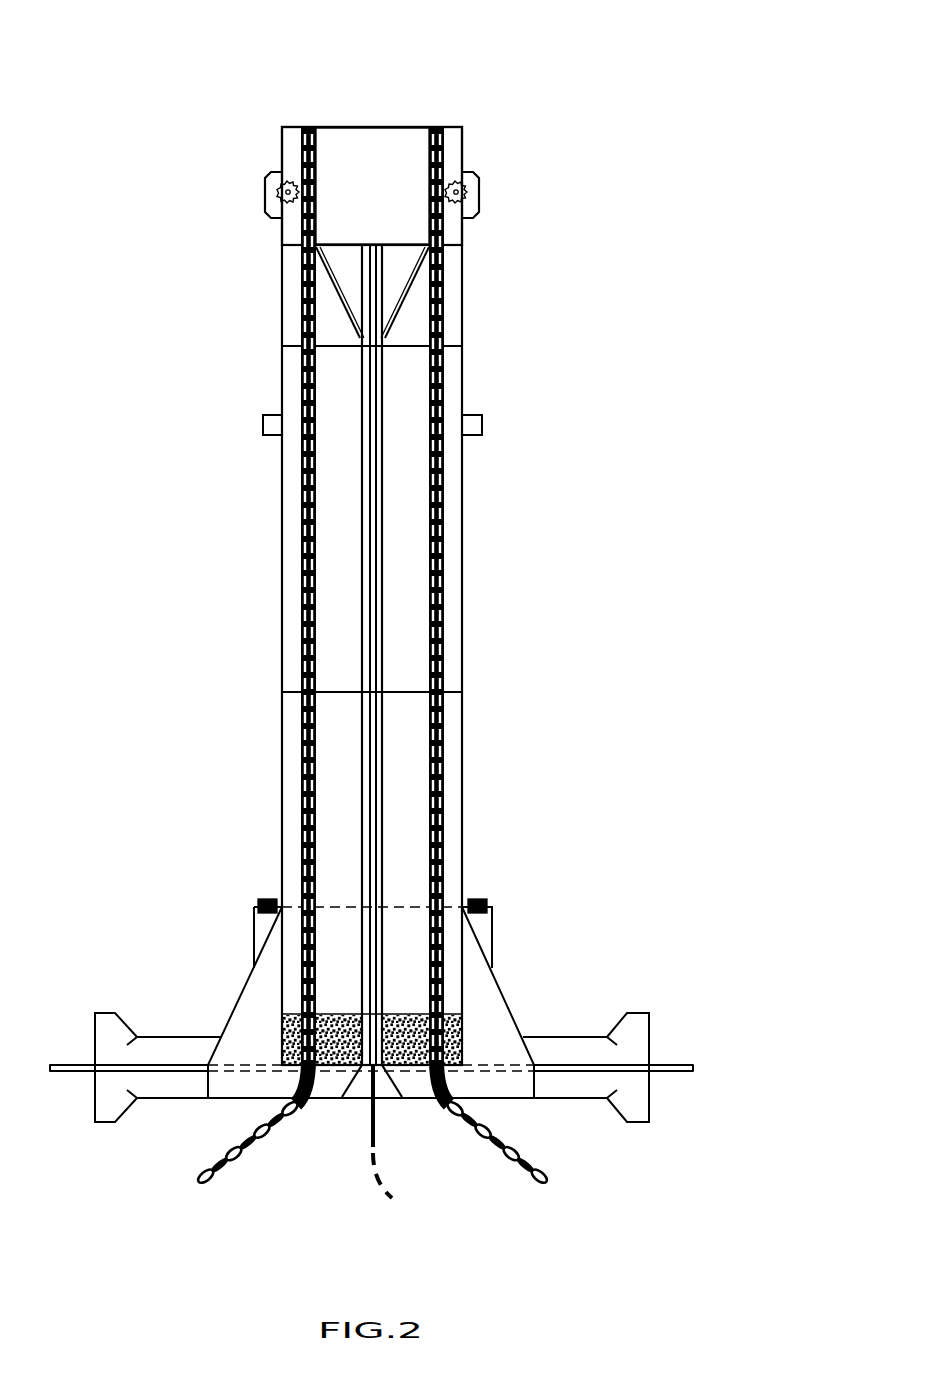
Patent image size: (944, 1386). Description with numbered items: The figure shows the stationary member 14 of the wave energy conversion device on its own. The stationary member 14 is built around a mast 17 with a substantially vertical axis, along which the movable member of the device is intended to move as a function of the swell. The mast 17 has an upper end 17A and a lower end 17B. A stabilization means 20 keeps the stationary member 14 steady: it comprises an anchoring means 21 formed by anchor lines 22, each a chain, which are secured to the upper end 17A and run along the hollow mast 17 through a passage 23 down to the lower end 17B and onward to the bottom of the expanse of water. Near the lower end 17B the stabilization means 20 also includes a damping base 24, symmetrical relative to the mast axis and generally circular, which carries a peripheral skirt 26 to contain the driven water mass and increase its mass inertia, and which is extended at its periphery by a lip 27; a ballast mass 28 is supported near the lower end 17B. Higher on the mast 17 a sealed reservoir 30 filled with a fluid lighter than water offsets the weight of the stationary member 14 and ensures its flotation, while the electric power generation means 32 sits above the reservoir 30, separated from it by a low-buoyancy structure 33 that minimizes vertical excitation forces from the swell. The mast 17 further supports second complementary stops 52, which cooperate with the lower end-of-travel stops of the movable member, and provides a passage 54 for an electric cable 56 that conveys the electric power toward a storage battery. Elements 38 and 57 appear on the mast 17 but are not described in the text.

The stationary member 14 is at (236, 380).
The mast 17 is at (478, 638).
The upper end of the mast 17A is at (410, 118).
The lower end of the mast 17B is at (325, 1110).
The electric power generation means 32 is at (345, 150).
The low-buoyancy structure 33 is at (470, 272).
The passage 23 is at (445, 298).
The sealed reservoir 30 is at (400, 382).
The passage 54 is at (384, 562).
The electric cable 56 is at (376, 1123).
The sprockets 38 is at (265, 190).
The second complementary stops 52 is at (483, 432).
The pads 57 is at (265, 900).
The ballast mass 28 is at (400, 1020).
The anchor line 22 is at (443, 717).
The stabilization means 20 is at (196, 970).
The anchoring means 21 is at (172, 1168).
The damping base 24 is at (575, 1045).
The peripheral skirt 26 is at (640, 1023).
The lip 27 is at (690, 1062).